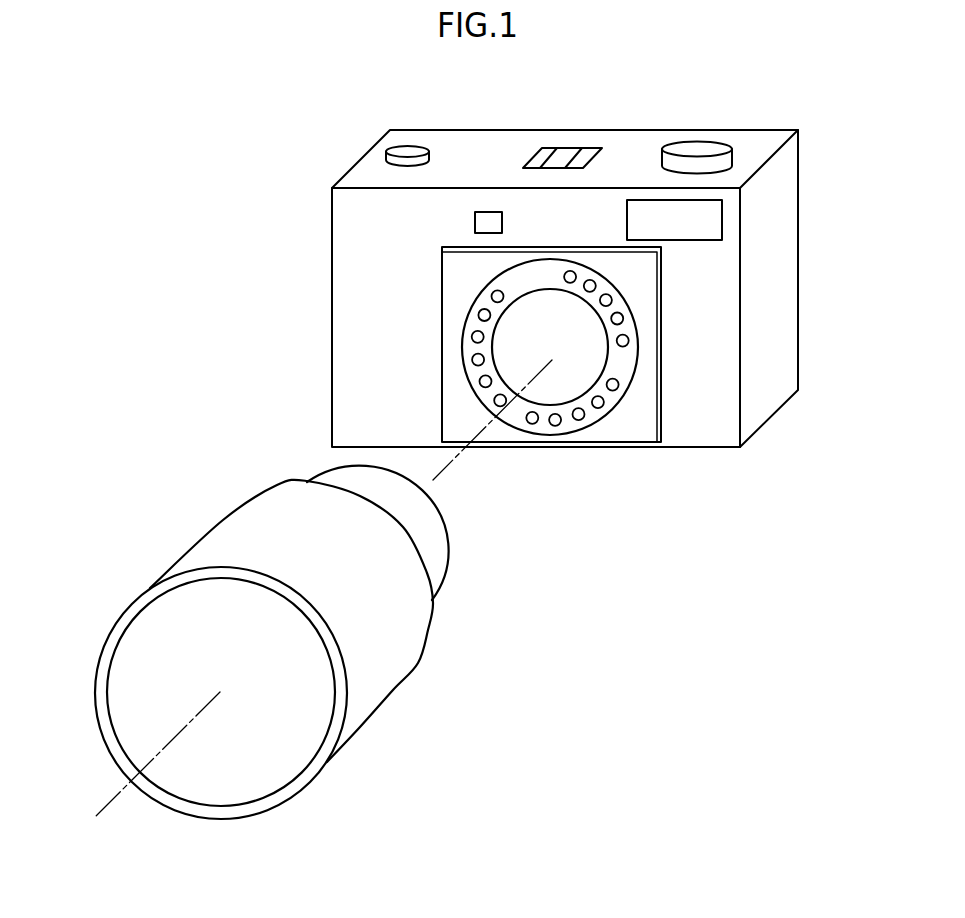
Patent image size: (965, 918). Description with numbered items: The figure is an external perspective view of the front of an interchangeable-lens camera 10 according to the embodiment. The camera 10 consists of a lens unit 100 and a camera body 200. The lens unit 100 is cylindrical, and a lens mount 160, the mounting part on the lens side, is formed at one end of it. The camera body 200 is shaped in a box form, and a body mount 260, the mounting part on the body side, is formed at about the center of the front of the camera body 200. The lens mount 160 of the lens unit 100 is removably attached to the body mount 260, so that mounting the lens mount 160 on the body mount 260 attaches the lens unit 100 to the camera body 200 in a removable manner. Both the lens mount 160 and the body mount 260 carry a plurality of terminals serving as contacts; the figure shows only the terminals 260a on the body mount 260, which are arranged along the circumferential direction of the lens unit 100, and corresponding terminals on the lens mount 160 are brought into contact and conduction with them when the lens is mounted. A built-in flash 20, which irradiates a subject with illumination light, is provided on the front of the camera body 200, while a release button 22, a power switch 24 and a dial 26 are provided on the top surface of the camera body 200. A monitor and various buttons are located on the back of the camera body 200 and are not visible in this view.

The camera 10 is at (870, 150).
The flash 20 is at (713, 219).
The release button 22 is at (407, 150).
The power switch 24 is at (560, 158).
The dial 26 is at (697, 148).
The lens unit 100 is at (393, 652).
The lens mount 160 is at (450, 580).
The camera body 200 is at (708, 427).
The body mount 260 is at (551, 388).
The terminals 260a is at (537, 421).